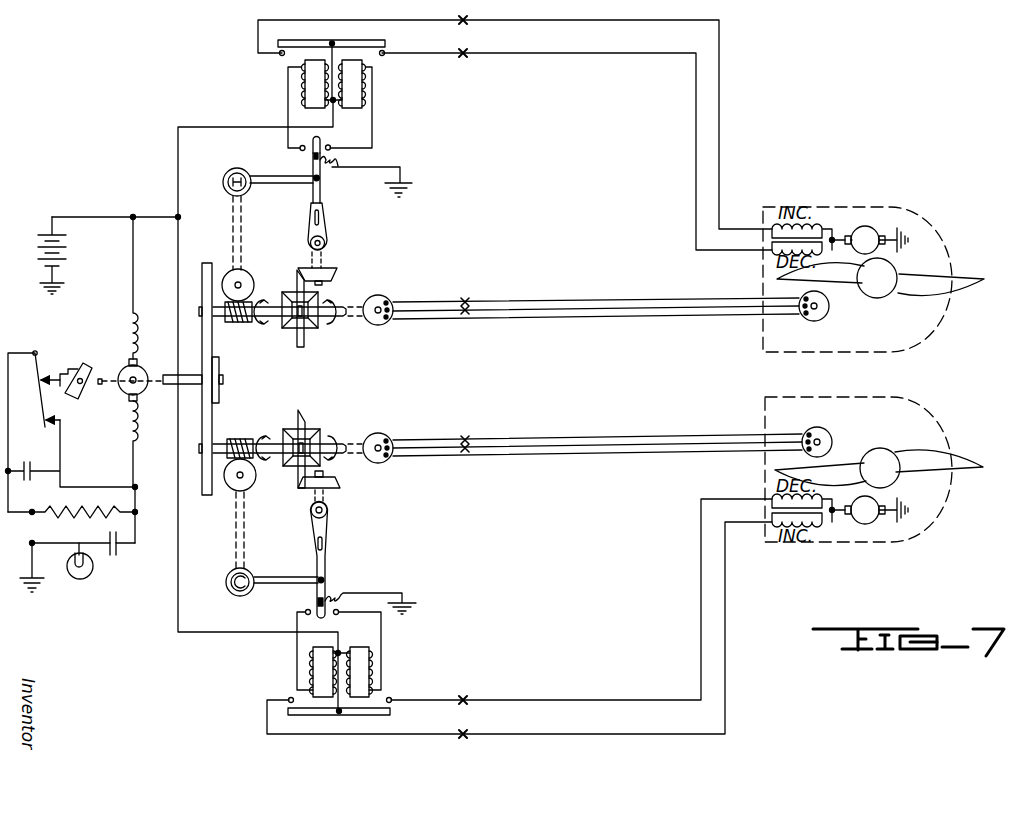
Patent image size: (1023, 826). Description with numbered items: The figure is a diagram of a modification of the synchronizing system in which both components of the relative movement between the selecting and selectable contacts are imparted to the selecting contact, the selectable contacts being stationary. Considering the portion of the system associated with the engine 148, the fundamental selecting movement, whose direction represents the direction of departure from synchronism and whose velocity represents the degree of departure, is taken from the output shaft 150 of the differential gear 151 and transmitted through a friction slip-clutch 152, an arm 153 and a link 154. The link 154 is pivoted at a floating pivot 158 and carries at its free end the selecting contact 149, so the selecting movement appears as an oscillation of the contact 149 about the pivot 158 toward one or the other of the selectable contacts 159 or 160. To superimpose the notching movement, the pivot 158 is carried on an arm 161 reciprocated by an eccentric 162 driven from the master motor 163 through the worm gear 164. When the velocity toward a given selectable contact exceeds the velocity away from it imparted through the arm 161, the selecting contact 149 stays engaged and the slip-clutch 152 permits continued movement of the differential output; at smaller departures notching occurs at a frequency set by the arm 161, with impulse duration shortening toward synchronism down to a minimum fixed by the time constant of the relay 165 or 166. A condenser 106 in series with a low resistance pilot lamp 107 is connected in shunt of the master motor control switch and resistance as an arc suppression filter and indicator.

The condenser 106 is at (118, 550).
The pilot lamp 107 is at (88, 574).
The engine 148 is at (886, 352).
The selecting contact 149 is at (318, 143).
The output shaft 150 is at (327, 248).
The differential gear 151 is at (310, 334).
The friction slip-clutch 152 is at (325, 240).
The arm 153 is at (310, 233).
The link 154 is at (313, 198).
The floating pivot 158 is at (319, 181).
The selectable contact 159 is at (300, 147).
The selectable contact 160 is at (331, 147).
The arm 161 is at (265, 180).
The eccentric 162 is at (232, 177).
The master motor 163 is at (127, 367).
The worm gear 164 is at (248, 298).
The relay 165 is at (307, 79).
The relay 166 is at (356, 96).